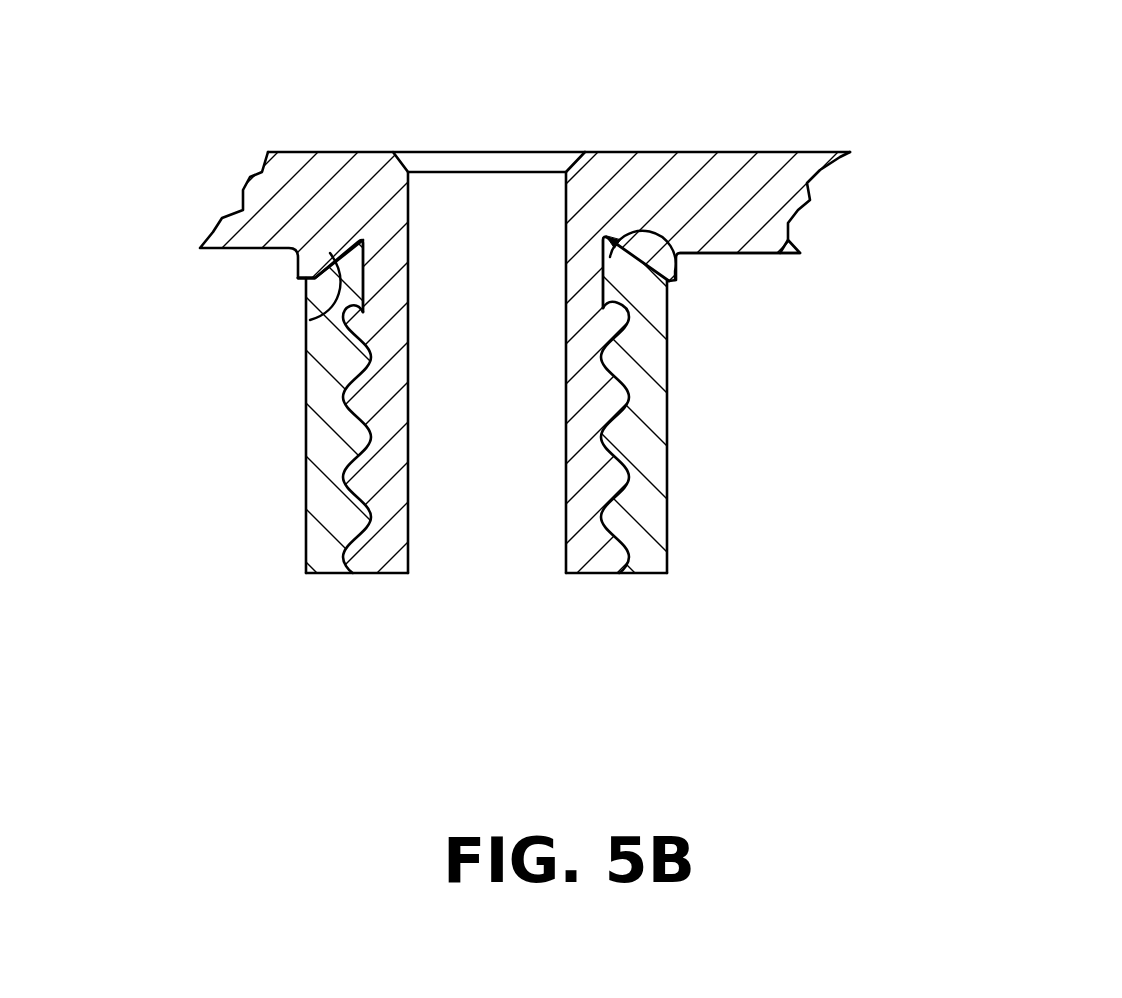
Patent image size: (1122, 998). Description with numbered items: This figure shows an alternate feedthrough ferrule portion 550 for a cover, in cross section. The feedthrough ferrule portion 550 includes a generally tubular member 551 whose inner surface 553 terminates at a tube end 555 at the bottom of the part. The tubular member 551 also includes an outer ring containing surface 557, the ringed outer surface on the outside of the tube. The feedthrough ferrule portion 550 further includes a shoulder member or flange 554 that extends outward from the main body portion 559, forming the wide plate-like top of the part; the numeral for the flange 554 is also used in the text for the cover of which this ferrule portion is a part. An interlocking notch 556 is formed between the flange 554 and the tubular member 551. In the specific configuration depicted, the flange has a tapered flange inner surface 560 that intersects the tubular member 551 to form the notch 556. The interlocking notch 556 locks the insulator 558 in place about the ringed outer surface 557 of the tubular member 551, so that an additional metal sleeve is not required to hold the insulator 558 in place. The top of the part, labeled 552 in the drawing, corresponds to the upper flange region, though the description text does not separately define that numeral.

The feedthrough ferrule portion 550 is at (312, 598).
The tubular member 551 is at (407, 312).
The flange 552 is at (643, 153).
The inner surface 553 is at (565, 396).
The flange 554 is at (315, 278).
The tube end 555 is at (385, 577).
The interlocking notch 556 is at (677, 256).
The outer ring containing surface 557 is at (350, 387).
The insulator 558 is at (667, 453).
The main body portion 559 is at (777, 253).
The tapered flange inner surface 560 is at (366, 357).